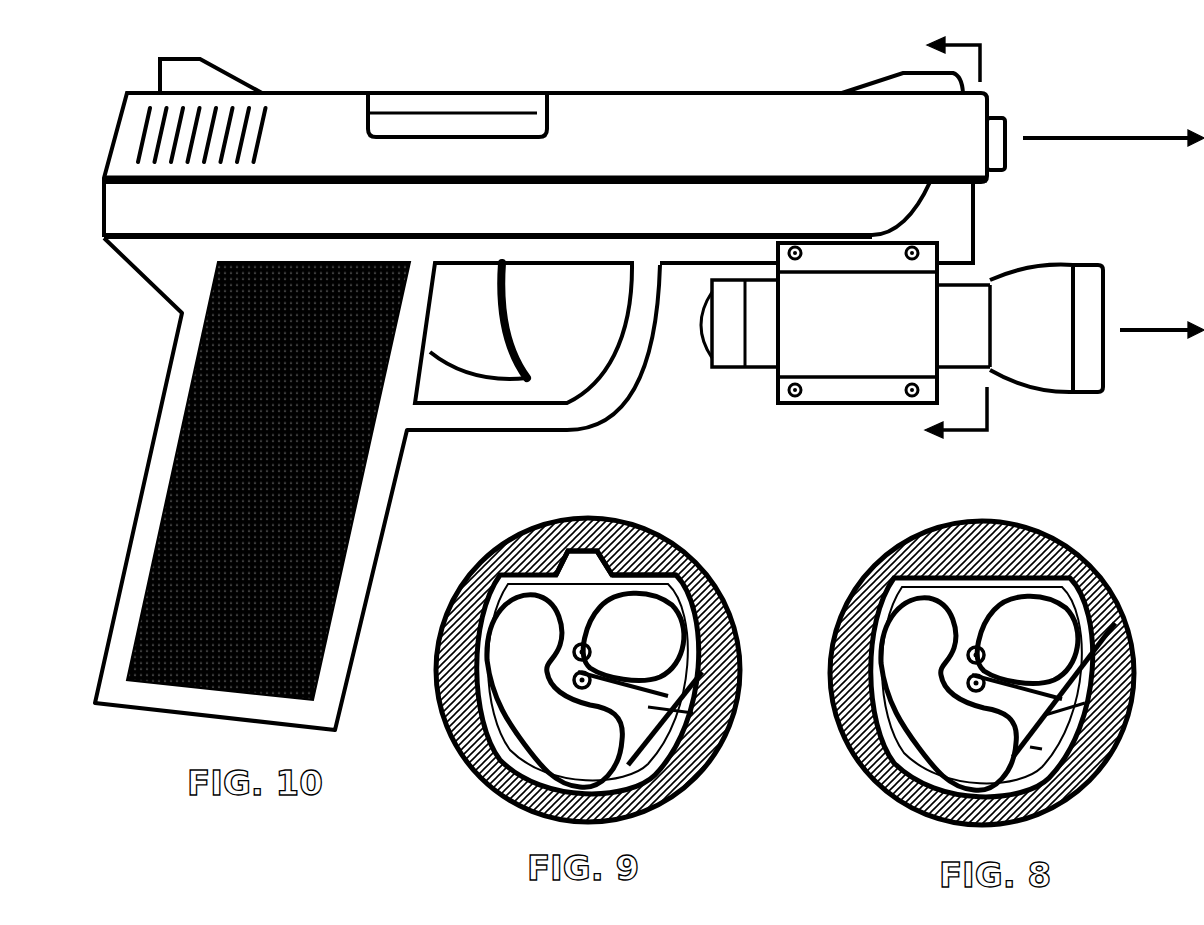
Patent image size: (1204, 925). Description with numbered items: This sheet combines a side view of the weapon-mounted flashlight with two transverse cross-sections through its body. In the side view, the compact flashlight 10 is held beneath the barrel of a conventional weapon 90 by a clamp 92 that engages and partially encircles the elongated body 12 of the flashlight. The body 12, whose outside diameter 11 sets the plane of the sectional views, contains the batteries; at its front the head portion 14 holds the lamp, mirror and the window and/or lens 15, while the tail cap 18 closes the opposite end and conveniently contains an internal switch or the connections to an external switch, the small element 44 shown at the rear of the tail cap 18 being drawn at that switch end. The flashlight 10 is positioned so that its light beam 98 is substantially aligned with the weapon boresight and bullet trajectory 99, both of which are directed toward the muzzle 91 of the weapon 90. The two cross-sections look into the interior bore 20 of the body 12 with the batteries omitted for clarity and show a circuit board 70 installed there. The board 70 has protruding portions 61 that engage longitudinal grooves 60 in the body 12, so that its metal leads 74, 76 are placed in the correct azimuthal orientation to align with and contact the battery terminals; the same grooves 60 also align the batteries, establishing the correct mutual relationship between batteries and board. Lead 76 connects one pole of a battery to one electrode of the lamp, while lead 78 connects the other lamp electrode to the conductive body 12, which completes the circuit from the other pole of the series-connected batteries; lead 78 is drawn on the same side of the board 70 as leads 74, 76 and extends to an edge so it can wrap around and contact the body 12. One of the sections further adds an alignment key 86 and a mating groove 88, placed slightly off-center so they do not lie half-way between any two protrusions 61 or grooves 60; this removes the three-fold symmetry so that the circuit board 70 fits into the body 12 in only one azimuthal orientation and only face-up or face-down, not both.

In FIG. 10, the compact flashlight 10 is at (1034, 421).
In FIG. 10, the outside diameter 11 is at (940, 237).
In FIG. 10, the elongated body 12 is at (1055, 347).
In FIG. 9, the elongated body 12 is at (445, 710).
In FIG. 8, the elongated body 12 is at (842, 733).
In FIG. 10, the head portion 14 is at (1046, 328).
In FIG. 10, the window and/or lens 15 is at (1105, 355).
In FIG. 10, the tail cap 18 is at (732, 357).
In FIG. 8, the interior bore 20 is at (1130, 718).
In FIG. 10, the switch button 44 is at (700, 327).
In FIG. 9, the longitudinal grooves 60 is at (448, 617).
In FIG. 8, the longitudinal grooves 60 is at (840, 630).
In FIG. 9, the circuit board portions 61 is at (472, 577).
In FIG. 8, the circuit board portions 61 is at (858, 587).
In FIG. 9, the circuit board 70 is at (693, 780).
In FIG. 8, the circuit board 70 is at (1085, 790).
In FIG. 9, the lead 74 is at (563, 756).
In FIG. 8, the lead 74 is at (958, 761).
In FIG. 9, the lead 76 is at (623, 654).
In FIG. 8, the lead 76 is at (1027, 656).
In FIG. 9, the lead 78 is at (725, 727).
In FIG. 8, the lead 78 is at (1108, 765).
In FIG. 9, the alignment key 86 is at (667, 552).
In FIG. 9, the alignment groove 88 is at (549, 532).
In FIG. 10, the weapon 90 is at (160, 746).
In FIG. 10, the muzzle 91 is at (1005, 158).
In FIG. 10, the clamp 92 is at (843, 347).
In FIG. 10, the light beam 98 is at (1137, 330).
In FIG. 10, the bullet trajectory 99 is at (1107, 138).